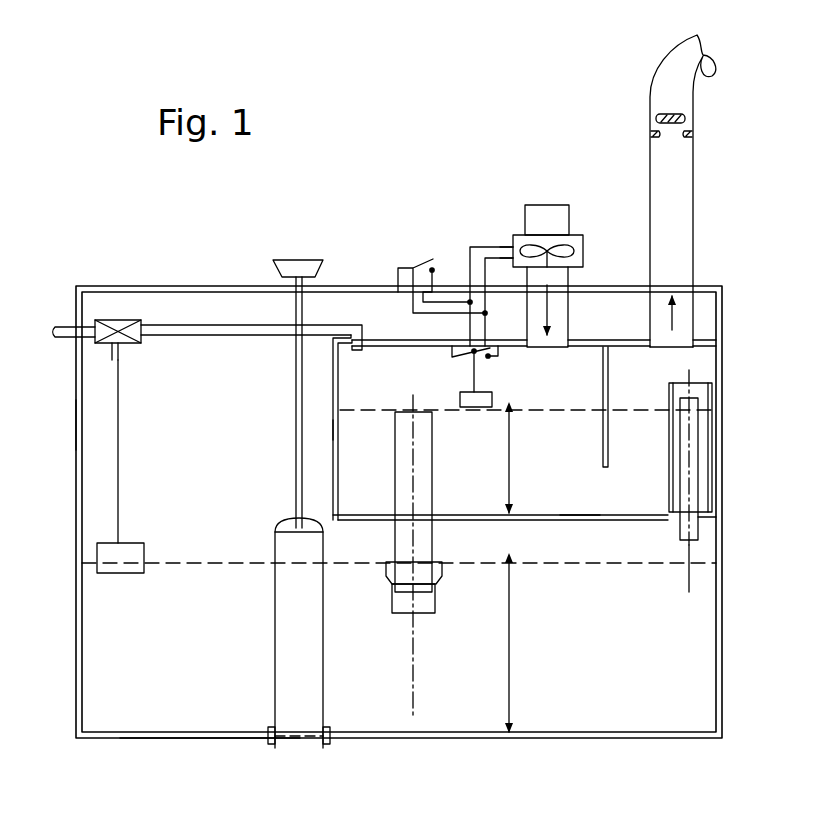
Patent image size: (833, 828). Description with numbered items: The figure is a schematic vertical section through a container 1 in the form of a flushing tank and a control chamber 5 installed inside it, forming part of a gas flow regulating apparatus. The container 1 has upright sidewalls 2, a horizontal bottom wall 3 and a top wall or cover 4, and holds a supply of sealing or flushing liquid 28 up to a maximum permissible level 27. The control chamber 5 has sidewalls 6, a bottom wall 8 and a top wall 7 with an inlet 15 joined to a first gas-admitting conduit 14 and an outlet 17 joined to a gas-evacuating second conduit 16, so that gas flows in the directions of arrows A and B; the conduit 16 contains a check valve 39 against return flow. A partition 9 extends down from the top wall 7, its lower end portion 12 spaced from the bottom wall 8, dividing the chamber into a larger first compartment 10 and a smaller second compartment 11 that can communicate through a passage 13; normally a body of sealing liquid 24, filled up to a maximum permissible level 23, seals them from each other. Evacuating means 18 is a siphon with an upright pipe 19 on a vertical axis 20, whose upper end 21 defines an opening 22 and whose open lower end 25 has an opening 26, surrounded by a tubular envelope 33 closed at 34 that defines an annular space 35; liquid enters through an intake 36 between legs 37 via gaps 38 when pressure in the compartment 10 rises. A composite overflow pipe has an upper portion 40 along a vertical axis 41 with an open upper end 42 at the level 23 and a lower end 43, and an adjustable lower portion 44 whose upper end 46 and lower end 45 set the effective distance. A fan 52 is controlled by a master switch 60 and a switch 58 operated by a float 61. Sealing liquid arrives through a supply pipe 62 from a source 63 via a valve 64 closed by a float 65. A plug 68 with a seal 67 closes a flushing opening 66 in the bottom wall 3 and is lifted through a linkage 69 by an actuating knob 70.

The container 1 is at (98, 368).
The sidewalls 2 is at (75, 429).
The bottom wall 3 is at (138, 736).
The top wall 4 is at (108, 287).
The control chamber 5 is at (338, 371).
The sidewalls 6 is at (332, 431).
The top wall 7 is at (396, 339).
The bottom wall 8 is at (566, 520).
The partition 9 is at (609, 372).
The first compartment 10 is at (548, 398).
The second compartment 11 is at (658, 398).
The lower end portion 12 is at (601, 464).
The passage 13 is at (608, 496).
The first gas-admitting conduit 14 is at (536, 216).
The inlet 15 is at (546, 349).
The gas-evacuating second conduit 16 is at (683, 161).
The outlet 17 is at (672, 347).
The evacuating means 18 is at (700, 530).
The upright pipe 19 is at (690, 446).
The vertical axis 20 is at (689, 574).
The upper end 21 is at (692, 396).
The opening 22 is at (690, 400).
The maximum permissible level 23 is at (507, 483).
The sealing liquid 24 is at (558, 453).
The lower end 25 is at (694, 544).
The opening 26 is at (680, 541).
The maximum permissible level 27 is at (511, 632).
The liquid 28 is at (100, 614).
The tubular envelope 33 is at (712, 492).
The closed upper end 34 is at (700, 385).
The annular space 35 is at (704, 472).
The intake 36 is at (706, 517).
The legs 37 is at (676, 518).
The gaps 38 is at (682, 518).
The check valve 39 is at (657, 119).
The upper portion 40 is at (404, 539).
The vertical axis 41 is at (414, 678).
The upper end 42 is at (408, 412).
The lower end 43 is at (410, 592).
The lower portion 44 is at (393, 596).
The lower end 45 is at (392, 614).
The upper end 46 is at (390, 566).
The fan 52 is at (569, 246).
The switch 58 is at (456, 352).
The master switch 60 is at (408, 268).
The float 61 is at (478, 406).
The supply pipe 62 is at (222, 330).
The source 63 is at (70, 329).
The valve 64 is at (117, 329).
The float 65 is at (125, 548).
The flushing opening 66 is at (322, 735).
The seal 67 is at (268, 731).
The plug 68 is at (292, 611).
The linkage 69 is at (296, 481).
The actuating knob 70 is at (300, 262).
The arrow A is at (548, 303).
The arrow B is at (668, 312).